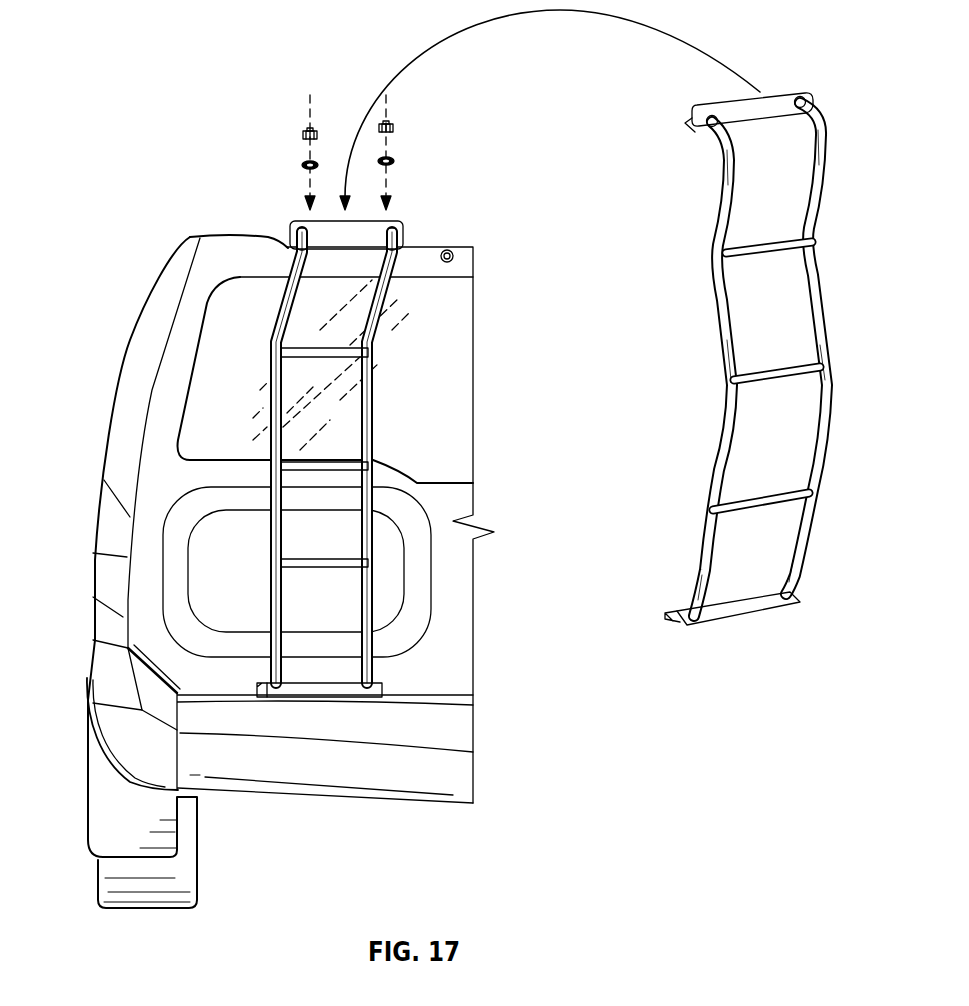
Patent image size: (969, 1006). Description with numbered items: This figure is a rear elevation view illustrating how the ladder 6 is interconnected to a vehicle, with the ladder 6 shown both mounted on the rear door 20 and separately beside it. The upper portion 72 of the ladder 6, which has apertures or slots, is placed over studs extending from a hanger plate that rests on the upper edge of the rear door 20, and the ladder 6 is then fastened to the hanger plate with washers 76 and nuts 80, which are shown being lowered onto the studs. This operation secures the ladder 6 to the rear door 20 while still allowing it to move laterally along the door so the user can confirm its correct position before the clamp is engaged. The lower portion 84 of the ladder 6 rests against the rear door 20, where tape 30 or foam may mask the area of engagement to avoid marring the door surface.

The rear door 20 is at (183, 497).
The ladder 6 is at (373, 385).
The tape 30 is at (736, 573).
The upper portion 72 is at (327, 235).
The lower portion 84 is at (300, 692).
The nuts 80 is at (393, 127).
The washers 76 is at (394, 162).